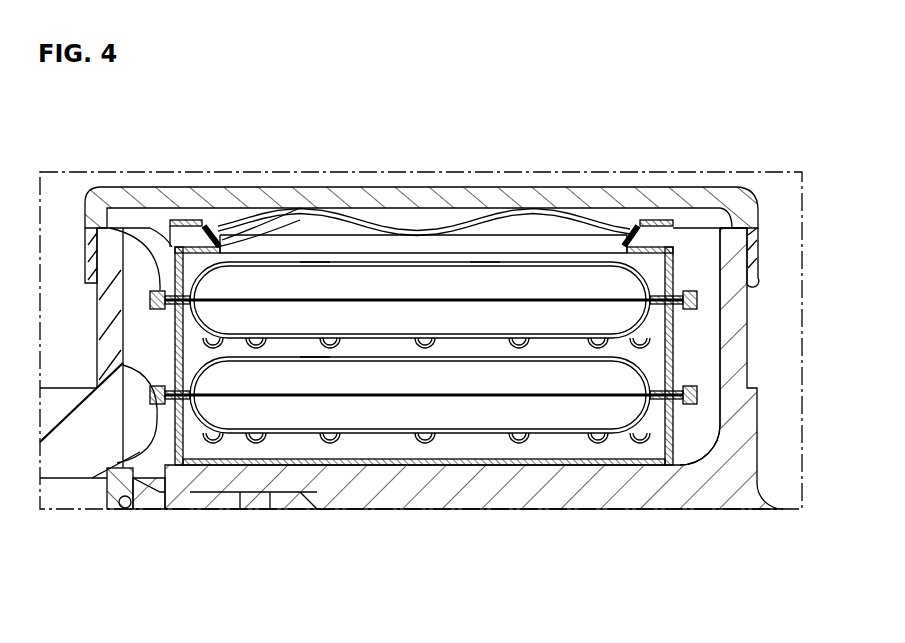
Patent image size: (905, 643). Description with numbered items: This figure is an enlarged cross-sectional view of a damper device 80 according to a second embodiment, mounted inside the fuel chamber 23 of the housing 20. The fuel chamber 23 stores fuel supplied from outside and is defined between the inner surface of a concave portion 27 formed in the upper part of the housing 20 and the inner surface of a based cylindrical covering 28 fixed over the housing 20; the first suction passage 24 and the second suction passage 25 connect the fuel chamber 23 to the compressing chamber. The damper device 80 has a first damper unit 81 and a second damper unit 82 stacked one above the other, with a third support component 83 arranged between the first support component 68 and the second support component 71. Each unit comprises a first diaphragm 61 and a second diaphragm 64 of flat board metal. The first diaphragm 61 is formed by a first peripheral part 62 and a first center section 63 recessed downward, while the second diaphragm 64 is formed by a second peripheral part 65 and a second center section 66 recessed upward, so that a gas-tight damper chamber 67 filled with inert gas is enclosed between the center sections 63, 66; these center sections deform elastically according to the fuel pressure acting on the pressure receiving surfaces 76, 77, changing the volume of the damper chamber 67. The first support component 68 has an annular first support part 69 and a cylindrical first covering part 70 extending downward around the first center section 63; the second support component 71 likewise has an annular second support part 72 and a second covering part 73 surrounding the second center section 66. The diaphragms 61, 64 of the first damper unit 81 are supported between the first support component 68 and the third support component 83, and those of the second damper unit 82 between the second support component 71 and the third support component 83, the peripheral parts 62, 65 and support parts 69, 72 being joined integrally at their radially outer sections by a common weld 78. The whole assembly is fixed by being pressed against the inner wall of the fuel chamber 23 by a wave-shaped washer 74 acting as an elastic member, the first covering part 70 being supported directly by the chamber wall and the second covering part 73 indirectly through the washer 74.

The housing 20 is at (740, 471).
The fuel chamber 23 is at (690, 255).
The first suction passage 24 is at (83, 443).
The second suction passage 25 is at (67, 497).
The concave portion 27 is at (700, 423).
The based cylindrical covering 28 is at (95, 209).
The first diaphragm 61 is at (452, 450).
The first peripheral part 62 is at (230, 240).
The first center section 63 is at (487, 434).
The second diaphragm 64 is at (309, 342).
The second peripheral part 65 is at (187, 223).
The second center section 66 is at (482, 262).
The damper chamber 67 is at (418, 285).
The first support component 68 is at (183, 468).
The first support part 69 is at (150, 324).
The first covering part 70 is at (147, 492).
The second support component 71 is at (165, 240).
The second support part 72 is at (158, 288).
The second covering part 73 is at (166, 234).
The wave-shaped washer 74 is at (538, 215).
The pressure receiving surface 76 is at (386, 448).
The pressure receiving surface 77 is at (380, 262).
The weld 78 is at (150, 298).
The damper device 80 is at (127, 281).
The first damper unit 81 is at (712, 305).
The second damper unit 82 is at (712, 397).
The third support component 83 is at (177, 354).